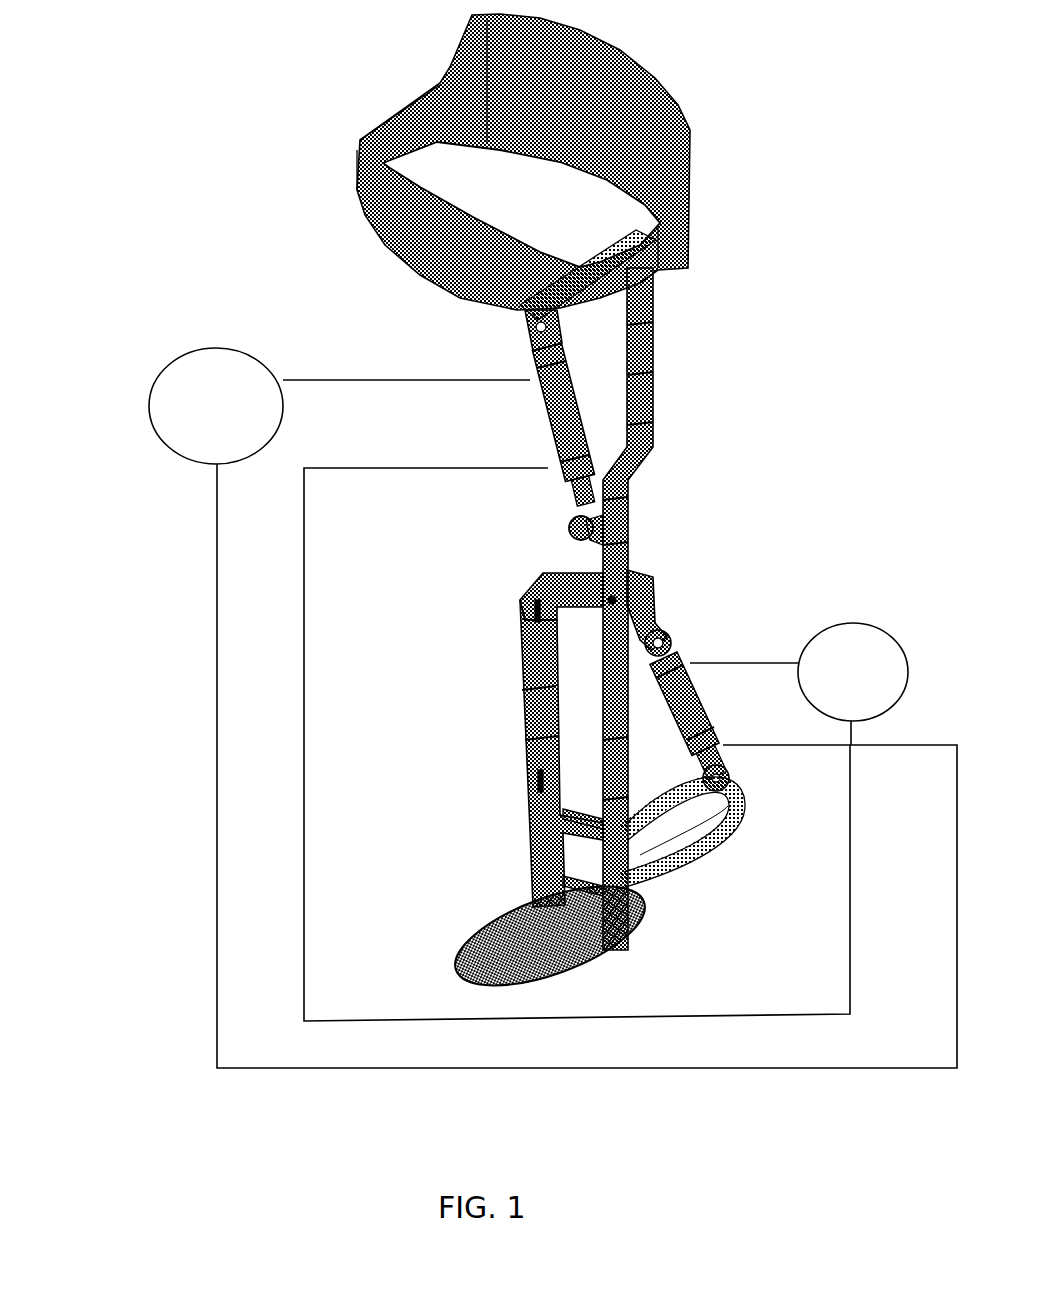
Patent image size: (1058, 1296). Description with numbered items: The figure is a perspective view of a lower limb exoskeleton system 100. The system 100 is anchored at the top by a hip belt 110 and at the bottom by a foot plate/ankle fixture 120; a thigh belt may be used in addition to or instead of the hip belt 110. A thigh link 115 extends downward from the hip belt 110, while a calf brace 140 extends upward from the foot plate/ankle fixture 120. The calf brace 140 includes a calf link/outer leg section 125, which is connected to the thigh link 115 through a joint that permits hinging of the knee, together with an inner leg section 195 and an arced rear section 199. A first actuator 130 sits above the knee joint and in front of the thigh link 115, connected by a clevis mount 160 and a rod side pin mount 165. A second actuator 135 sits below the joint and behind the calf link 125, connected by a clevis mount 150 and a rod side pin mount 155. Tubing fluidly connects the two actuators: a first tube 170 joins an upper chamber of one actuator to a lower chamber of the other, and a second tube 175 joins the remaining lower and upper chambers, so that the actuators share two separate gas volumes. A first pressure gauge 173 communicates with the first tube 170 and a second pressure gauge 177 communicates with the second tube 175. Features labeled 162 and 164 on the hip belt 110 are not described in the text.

The lower limb exoskeleton system 100 is at (218, 96).
The hip belt 110 is at (630, 56).
The thigh link 115 is at (656, 409).
The foot plate/ankle fixture 120 is at (460, 940).
The calf link/outer leg section 125 is at (623, 772).
The first actuator 130 is at (545, 437).
The second actuator 135 is at (704, 690).
The calf brace 140 is at (527, 718).
The clevis mount 150 is at (727, 780).
The rod side pin mount 155 is at (652, 588).
The clevis mount 160 is at (524, 330).
The hip strap 162 is at (690, 178).
The hip flap 164 is at (358, 185).
The rod side pin mount 165 is at (568, 528).
The first tube 170 is at (216, 826).
The first pressure gauge 173 is at (339, 406).
The second tube 175 is at (850, 965).
The second pressure gauge 177 is at (799, 672).
The inner leg section 195 is at (535, 786).
The arced rear section 199 is at (543, 571).